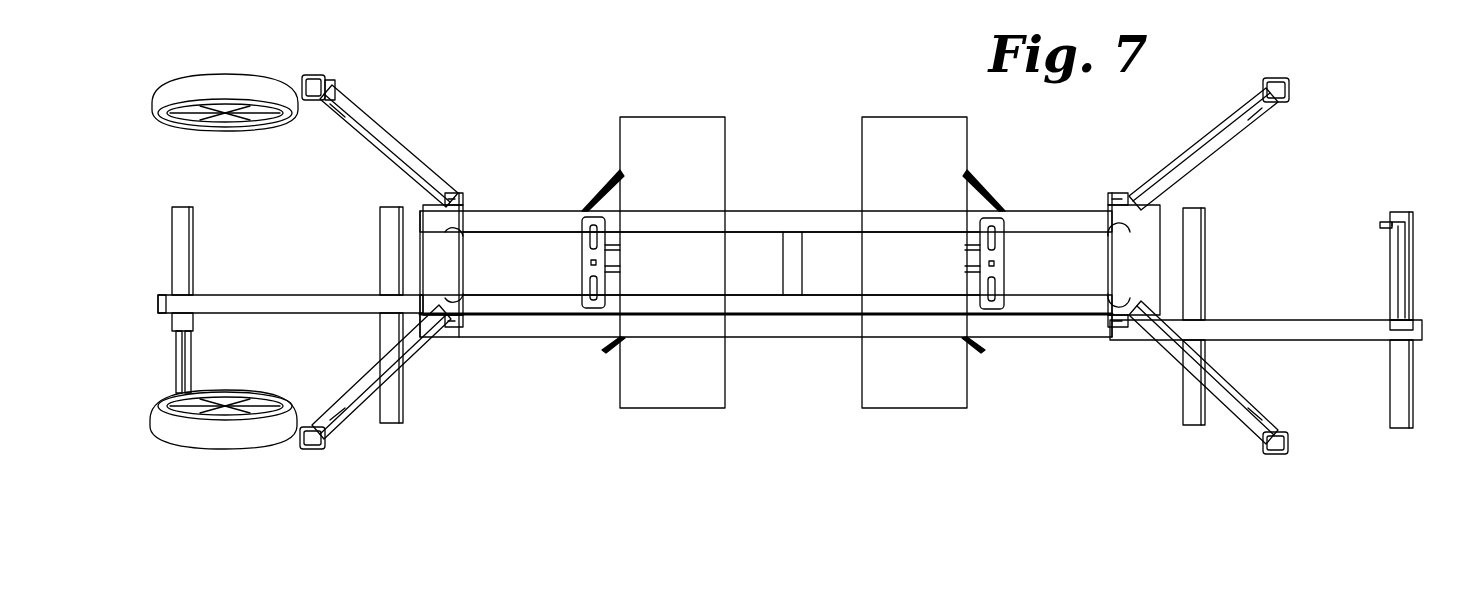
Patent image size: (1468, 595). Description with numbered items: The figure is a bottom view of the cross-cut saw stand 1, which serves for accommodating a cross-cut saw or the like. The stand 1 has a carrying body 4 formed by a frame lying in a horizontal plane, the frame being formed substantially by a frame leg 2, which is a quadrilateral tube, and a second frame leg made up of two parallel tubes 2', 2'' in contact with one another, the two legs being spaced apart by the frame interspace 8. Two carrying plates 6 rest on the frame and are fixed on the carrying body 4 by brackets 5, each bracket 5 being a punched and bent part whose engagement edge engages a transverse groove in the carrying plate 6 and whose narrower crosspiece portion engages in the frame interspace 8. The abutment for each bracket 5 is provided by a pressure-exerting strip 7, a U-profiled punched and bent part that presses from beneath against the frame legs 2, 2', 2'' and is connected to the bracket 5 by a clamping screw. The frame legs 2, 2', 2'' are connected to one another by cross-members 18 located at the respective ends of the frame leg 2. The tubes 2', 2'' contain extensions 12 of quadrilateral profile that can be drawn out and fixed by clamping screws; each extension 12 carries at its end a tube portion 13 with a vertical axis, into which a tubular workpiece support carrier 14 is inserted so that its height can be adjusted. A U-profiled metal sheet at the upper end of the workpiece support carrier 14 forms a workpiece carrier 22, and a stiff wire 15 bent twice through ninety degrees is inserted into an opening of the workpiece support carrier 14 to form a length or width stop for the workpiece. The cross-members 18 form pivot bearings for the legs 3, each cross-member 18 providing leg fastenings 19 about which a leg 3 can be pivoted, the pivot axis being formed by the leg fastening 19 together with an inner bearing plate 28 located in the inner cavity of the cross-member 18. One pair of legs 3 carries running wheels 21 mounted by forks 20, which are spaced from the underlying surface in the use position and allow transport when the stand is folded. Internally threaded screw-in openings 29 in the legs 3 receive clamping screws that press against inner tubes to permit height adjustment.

The cross-cut saw stand 1 is at (505, 105).
The frame leg 2 is at (766, 224).
The tube 2' is at (840, 352).
The tube 2'' is at (840, 364).
The leg 3 is at (360, 140).
The carrying body 4 is at (512, 340).
The bracket 5 is at (607, 200).
The carrying plate 6 is at (676, 135).
The pressure-exerting strip 7 is at (586, 310).
The frame interspace 8 is at (752, 248).
The extension 12 is at (300, 300).
The tube portion 13 is at (190, 322).
The workpiece support carrier 14 is at (187, 326).
The wire 15 is at (180, 355).
The cross-member 18 is at (455, 270).
The leg fastening 19 is at (455, 192).
The fork 20 is at (300, 78).
The running wheel 21 is at (175, 84).
The workpiece carrier 22 is at (180, 228).
The inner bearing plate 28 is at (462, 235).
The screw-in opening 29 is at (342, 120).